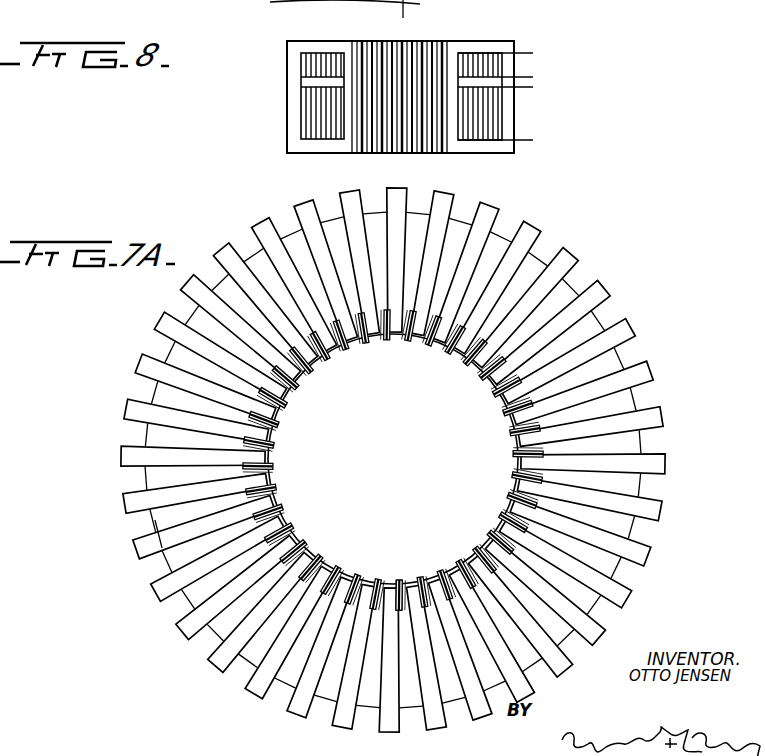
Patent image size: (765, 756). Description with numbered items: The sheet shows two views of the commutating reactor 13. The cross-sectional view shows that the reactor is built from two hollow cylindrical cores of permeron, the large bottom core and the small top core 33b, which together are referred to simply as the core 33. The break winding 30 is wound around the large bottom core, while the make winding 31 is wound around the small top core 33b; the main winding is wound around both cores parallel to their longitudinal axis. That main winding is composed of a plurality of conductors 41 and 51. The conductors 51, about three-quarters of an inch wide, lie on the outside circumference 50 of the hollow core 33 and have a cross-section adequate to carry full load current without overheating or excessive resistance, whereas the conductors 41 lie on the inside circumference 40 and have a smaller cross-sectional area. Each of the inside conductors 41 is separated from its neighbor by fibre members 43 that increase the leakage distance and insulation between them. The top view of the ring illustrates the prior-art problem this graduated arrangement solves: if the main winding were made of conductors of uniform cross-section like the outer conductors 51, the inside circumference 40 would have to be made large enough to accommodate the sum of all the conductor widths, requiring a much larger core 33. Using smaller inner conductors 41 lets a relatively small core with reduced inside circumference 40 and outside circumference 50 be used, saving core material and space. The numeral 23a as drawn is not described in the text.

In FIG. 8, the conductors 51 is at (293, 112).
In FIG. 7A, the conductors 51 is at (150, 555).
In FIG. 8, the fibre members 43 is at (396, 41).
In FIG. 7A, the fibre members 43 is at (295, 380).
In FIG. 8, the conductors 41 is at (397, 153).
In FIG. 7A, the conductors 41 is at (267, 505).
In FIG. 8, the coil section 23a is at (502, 117).
In FIG. 8, the small top core 33b is at (478, 60).
In FIG. 8, the make winding 31 is at (530, 53).
In FIG. 8, the break winding 30 is at (532, 87).
In FIG. 7A, the outside circumference 50 is at (217, 645).
In FIG. 7A, the commutating reactor 13 is at (226, 571).
In FIG. 7A, the inside circumference 40 is at (407, 555).
In FIG. 7A, the core 33 is at (203, 524).